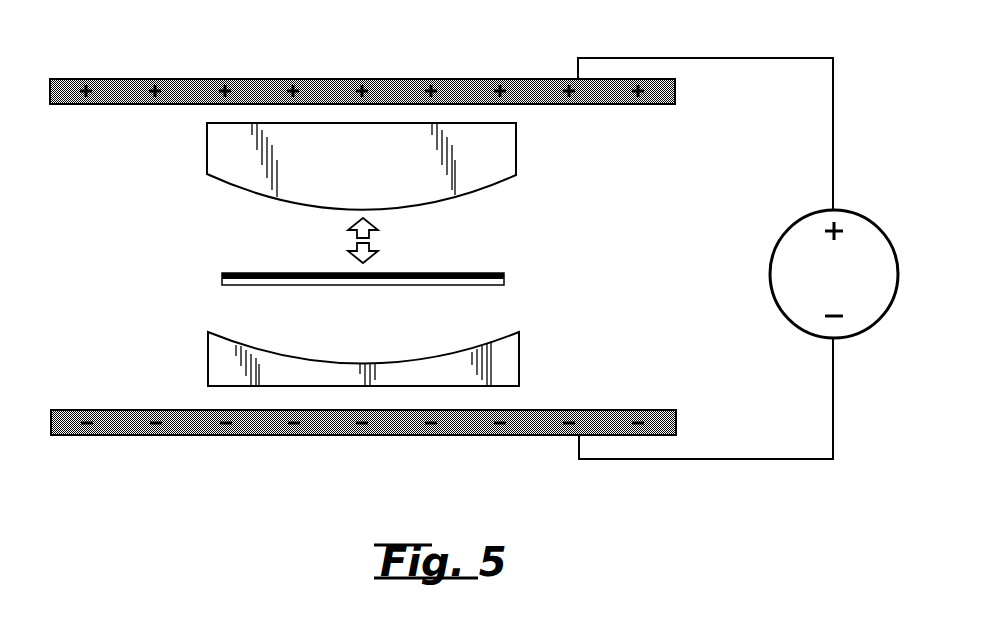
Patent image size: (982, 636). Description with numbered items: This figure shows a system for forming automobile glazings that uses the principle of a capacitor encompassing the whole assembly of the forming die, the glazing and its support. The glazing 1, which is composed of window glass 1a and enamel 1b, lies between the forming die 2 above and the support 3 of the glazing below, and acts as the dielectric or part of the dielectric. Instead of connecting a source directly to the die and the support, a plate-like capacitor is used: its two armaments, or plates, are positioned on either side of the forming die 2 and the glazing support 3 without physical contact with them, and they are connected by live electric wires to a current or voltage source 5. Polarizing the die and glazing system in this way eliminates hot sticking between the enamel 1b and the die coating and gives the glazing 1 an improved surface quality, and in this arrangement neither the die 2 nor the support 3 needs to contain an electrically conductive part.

The glazing 1 is at (332, 269).
The window glass 1a is at (452, 287).
The enamel 1b is at (466, 272).
The forming die 2 is at (207, 153).
The support of the glazing 3 is at (208, 363).
The current or voltage source 5 is at (779, 243).